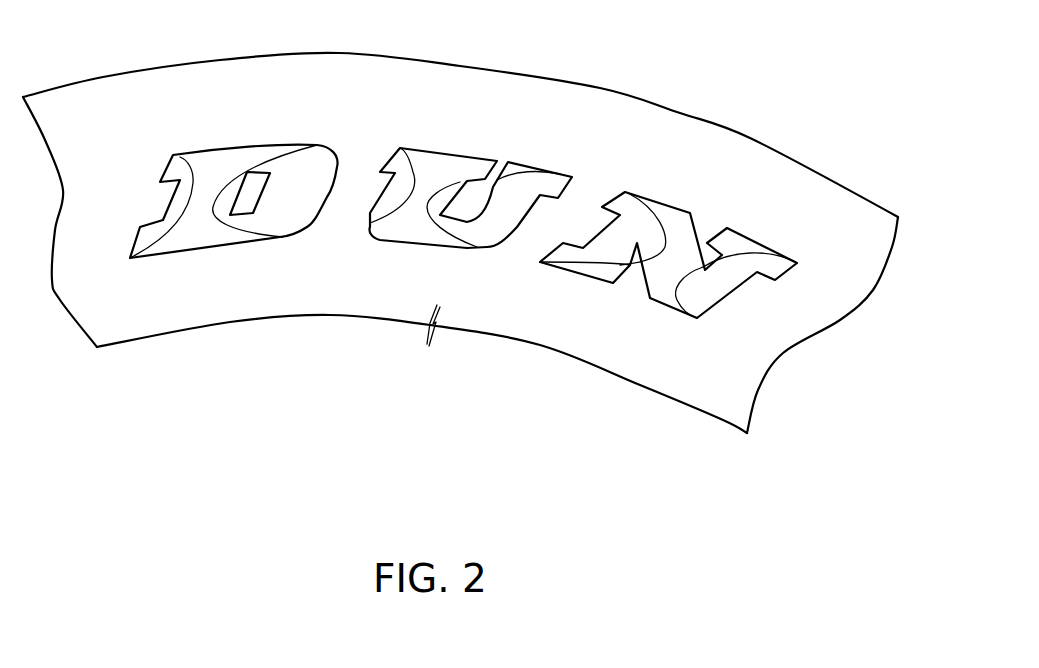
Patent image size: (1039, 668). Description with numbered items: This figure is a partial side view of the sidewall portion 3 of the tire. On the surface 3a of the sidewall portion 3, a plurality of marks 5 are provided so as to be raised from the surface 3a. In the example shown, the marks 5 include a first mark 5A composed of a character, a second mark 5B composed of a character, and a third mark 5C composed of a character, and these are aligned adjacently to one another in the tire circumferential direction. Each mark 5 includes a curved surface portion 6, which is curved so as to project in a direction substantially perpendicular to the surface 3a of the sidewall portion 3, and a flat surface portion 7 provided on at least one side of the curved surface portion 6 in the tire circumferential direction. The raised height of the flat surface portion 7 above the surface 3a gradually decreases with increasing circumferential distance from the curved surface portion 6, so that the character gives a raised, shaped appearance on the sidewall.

The sidewall portion 3 is at (483, 243).
The surface of the sidewall portion 3a is at (846, 262).
The mark 5 is at (469, 231).
The first mark 5A is at (233, 230).
The second mark 5B is at (422, 230).
The third mark 5C is at (607, 280).
The curved surface portion 6 is at (463, 211).
The flat surface portion 7 is at (164, 171).